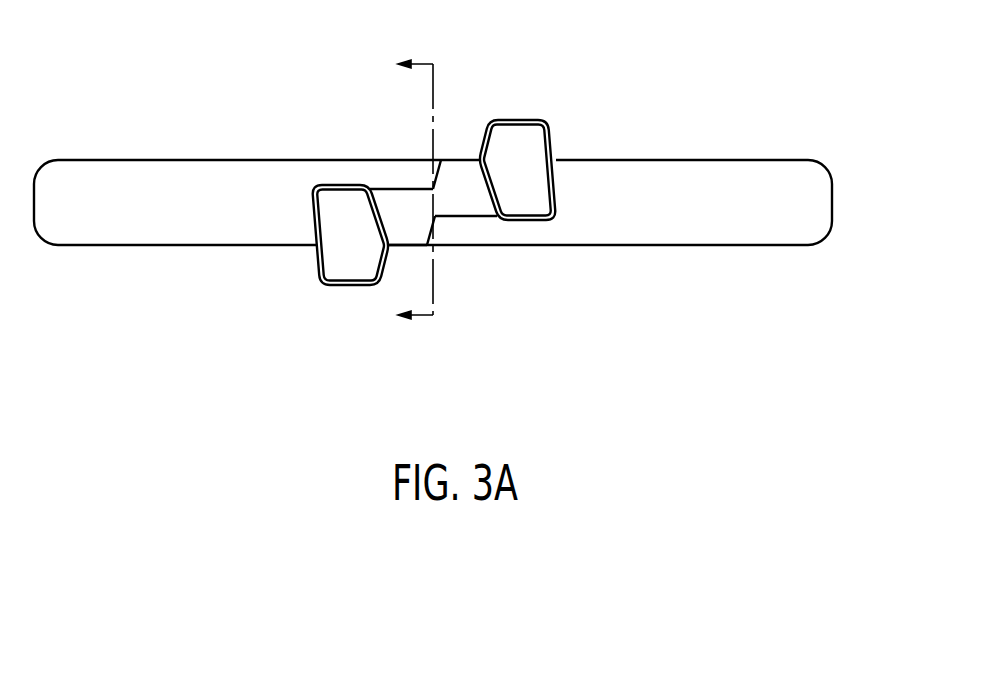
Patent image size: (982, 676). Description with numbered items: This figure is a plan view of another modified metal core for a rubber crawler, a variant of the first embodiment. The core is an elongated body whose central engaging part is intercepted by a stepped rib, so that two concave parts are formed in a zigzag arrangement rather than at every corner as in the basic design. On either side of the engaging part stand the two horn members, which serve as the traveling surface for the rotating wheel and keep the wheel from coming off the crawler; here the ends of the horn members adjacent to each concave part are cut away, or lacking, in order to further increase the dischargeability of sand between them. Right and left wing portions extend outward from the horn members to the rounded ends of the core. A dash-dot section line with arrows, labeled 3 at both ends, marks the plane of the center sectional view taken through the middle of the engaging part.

The section line 3- 3 is at (417, 190).